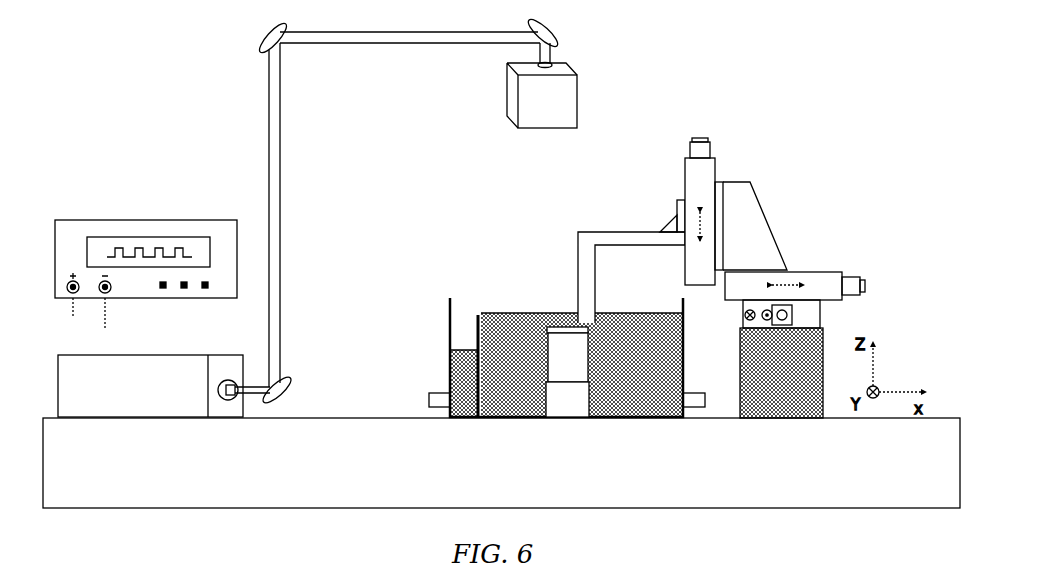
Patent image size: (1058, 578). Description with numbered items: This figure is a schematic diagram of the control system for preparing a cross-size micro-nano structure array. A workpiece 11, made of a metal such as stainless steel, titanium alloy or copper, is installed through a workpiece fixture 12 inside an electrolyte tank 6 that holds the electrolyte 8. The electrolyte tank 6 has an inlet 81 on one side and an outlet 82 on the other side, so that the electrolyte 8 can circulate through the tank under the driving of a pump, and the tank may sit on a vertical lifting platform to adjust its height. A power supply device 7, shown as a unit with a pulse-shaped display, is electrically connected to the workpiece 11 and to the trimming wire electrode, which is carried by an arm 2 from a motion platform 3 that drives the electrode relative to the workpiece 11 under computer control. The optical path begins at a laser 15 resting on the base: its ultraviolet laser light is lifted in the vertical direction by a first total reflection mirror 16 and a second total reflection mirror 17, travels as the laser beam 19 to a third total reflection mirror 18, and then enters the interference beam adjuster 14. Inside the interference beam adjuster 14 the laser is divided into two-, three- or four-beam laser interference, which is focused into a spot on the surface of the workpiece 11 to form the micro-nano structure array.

The connecting arm 2 is at (585, 253).
The motion platform 3 is at (760, 237).
The electrolyte tank 6 is at (685, 373).
The power supply device 7 is at (68, 232).
The electrolyte 8 is at (673, 347).
The workpiece 11 is at (547, 318).
The workpiece fixture 12 is at (548, 365).
The interference beam adjuster 14 is at (520, 122).
The laser 15 is at (125, 380).
The first total reflection mirror 16 is at (290, 390).
The second total reflection mirror 17 is at (277, 40).
The third total reflection mirror 18 is at (563, 30).
The laser beam 19 is at (280, 253).
The inlet 81 is at (700, 407).
The outlet 82 is at (433, 393).